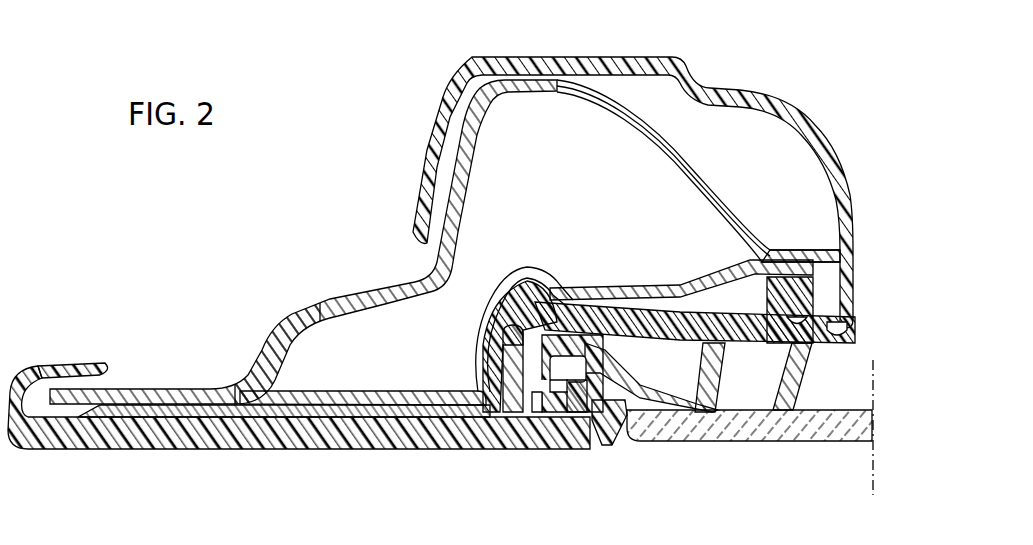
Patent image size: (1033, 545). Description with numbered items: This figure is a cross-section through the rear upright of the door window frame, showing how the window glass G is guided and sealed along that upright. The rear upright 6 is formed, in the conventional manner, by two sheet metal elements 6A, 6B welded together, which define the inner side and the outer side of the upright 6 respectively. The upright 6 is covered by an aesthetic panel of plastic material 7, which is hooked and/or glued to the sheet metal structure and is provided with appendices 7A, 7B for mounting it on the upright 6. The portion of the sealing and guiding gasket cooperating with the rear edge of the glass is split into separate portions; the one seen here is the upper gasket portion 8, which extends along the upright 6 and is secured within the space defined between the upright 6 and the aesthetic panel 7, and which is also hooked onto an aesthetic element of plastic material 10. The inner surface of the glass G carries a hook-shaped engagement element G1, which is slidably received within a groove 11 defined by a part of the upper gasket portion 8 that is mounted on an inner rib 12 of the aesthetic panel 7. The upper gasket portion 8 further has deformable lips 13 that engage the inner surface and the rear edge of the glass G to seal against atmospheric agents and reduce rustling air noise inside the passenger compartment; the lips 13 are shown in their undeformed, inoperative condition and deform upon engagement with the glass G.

The rear upright of the window frame 6 is at (373, 293).
The sheet metal element 6A is at (275, 345).
The sheet metal element 6B is at (432, 388).
The aesthetic panel of plastic material 7 is at (310, 433).
The appendix 7A is at (60, 365).
The appendix 7B is at (490, 412).
The upper gasket portion 8 is at (693, 322).
The aesthetic element of plastic material 10 is at (456, 78).
The groove 11 is at (530, 385).
The inner rib 12 is at (590, 392).
The deformable lips 13 is at (616, 445).
The glass G is at (800, 427).
The hook-shaped engagement element G1 is at (572, 400).